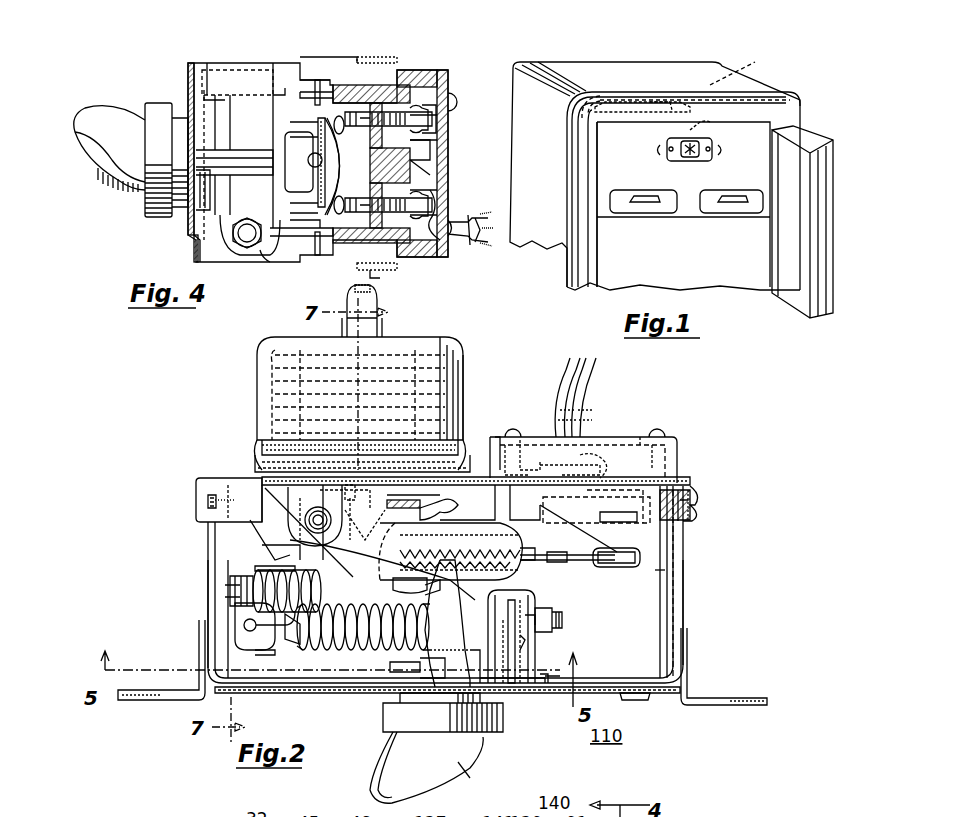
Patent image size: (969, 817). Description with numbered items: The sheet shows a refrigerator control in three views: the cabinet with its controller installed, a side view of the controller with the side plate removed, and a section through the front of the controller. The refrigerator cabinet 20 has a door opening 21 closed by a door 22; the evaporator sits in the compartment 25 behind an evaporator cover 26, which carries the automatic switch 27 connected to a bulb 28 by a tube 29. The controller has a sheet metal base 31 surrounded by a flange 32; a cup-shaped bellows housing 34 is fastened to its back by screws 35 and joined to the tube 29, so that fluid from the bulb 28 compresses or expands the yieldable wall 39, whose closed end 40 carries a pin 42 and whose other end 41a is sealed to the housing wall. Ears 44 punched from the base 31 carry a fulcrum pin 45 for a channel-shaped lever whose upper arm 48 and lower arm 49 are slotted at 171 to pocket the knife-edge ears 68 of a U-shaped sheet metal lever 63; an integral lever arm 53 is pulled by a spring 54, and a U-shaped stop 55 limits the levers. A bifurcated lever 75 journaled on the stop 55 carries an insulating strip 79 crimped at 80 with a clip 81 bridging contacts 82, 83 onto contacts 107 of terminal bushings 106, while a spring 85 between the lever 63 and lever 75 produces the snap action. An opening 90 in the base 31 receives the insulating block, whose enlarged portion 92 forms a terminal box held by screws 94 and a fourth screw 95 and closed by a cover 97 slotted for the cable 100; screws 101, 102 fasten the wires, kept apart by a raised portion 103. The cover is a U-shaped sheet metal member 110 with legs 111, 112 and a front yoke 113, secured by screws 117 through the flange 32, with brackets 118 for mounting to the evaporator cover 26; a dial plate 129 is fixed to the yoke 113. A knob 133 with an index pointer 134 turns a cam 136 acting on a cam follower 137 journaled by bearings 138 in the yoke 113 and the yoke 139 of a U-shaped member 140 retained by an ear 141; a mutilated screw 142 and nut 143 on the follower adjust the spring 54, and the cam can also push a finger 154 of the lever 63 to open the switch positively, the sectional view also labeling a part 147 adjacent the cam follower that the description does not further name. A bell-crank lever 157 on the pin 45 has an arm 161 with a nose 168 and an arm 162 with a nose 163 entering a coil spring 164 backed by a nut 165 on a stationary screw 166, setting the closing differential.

In FIG. 1, the refrigerator cabinet 20 is at (698, 63).
In FIG. 1, the door opening 21 is at (600, 272).
In FIG. 1, the door 22 is at (793, 156).
In FIG. 1, the compartment 25 is at (756, 62).
In FIG. 1, the evaporator cover 26 is at (685, 210).
In FIG. 1, the automatic switch 27 is at (690, 131).
In FIG. 1, the bulb 28 is at (665, 100).
In FIG. 1, the tube 29 is at (600, 100).
In FIG. 2, the tube 29 is at (378, 301).
In FIG. 1, the dial plate 129 is at (692, 158).
In FIG. 4, the base 31 is at (397, 60).
In FIG. 2, the base 31 is at (212, 478).
In FIG. 4, the flange 32 is at (383, 283).
In FIG. 2, the flange 32 is at (236, 508).
In FIG. 2, the bellows housing 34 is at (466, 373).
In FIG. 2, the screws 35 is at (255, 456).
In FIG. 2, the yieldable wall 39 is at (258, 373).
In FIG. 2, the closed end of bellows 40 is at (458, 338).
In FIG. 2, the sealed end of bellows 41a is at (307, 530).
In FIG. 2, the pin 42 is at (370, 510).
In FIG. 2, the ears 44 is at (322, 550).
In FIG. 2, the fulcrum pin 45 is at (330, 528).
In FIG. 4, the upper arm 48 is at (305, 80).
In FIG. 2, the upper arm 48 is at (508, 530).
In FIG. 4, the lower arm 49 is at (304, 242).
In FIG. 4, the lever arm 53 is at (290, 236).
In FIG. 2, the lever arm 53 is at (240, 637).
In FIG. 2, the spring 54 is at (303, 644).
In FIG. 2, the stop 55 is at (525, 502).
In FIG. 4, the sheet metal lever 63 is at (285, 150).
In FIG. 2, the sheet metal lever 63 is at (416, 592).
In FIG. 4, the ears 68 is at (318, 80).
In FIG. 4, the bifurcated lever 75 is at (290, 122).
In FIG. 2, the bifurcated lever 75 is at (548, 566).
In FIG. 2, the insulating strip 79 is at (605, 569).
In FIG. 2, the crimp 80 is at (573, 552).
In FIG. 4, the clip 81 is at (318, 153).
In FIG. 2, the clip 81 is at (630, 569).
In FIG. 2, the contact 82 is at (668, 556).
In FIG. 4, the contact 83 is at (345, 195).
In FIG. 4, the spring 85 is at (313, 168).
In FIG. 2, the spring 85 is at (518, 546).
In FIG. 4, the opening 90 is at (365, 70).
In FIG. 2, the enlarged portion 92 is at (678, 459).
In FIG. 2, the screws 94 is at (660, 438).
In FIG. 2, the fourth screw 95 is at (532, 440).
In FIG. 4, the cover 97 is at (437, 125).
In FIG. 4, the cable 100 is at (462, 250).
In FIG. 2, the cable 100 is at (586, 396).
In FIG. 4, the screw 101 is at (430, 118).
In FIG. 2, the screw 101 is at (630, 436).
In FIG. 4, the screw 102 is at (432, 205).
In FIG. 4, the raised portion 103 is at (432, 165).
In FIG. 4, the terminal bushings 106 is at (428, 80).
In FIG. 2, the terminal bushings 106 is at (680, 474).
In FIG. 4, the contacts 107 is at (372, 140).
In FIG. 2, the contacts 107 is at (668, 542).
In FIG. 4, the U-shaped sheet metal member 110 is at (188, 250).
In FIG. 2, the U-shaped sheet metal member 110 is at (449, 585).
In FIG. 2, the leg 111 is at (207, 545).
In FIG. 2, the leg 112 is at (684, 600).
In FIG. 2, the front yoke 113 is at (630, 700).
In FIG. 2, the screws 117 is at (196, 494).
In FIG. 2, the brackets 118 is at (165, 700).
In FIG. 4, the knob 133 is at (105, 150).
In FIG. 2, the knob 133 is at (435, 768).
In FIG. 4, the index pointer 134 is at (138, 192).
In FIG. 4, the cam 136 is at (200, 212).
In FIG. 2, the cam 136 is at (390, 668).
In FIG. 4, the cam follower 137 is at (222, 245).
In FIG. 2, the cam follower 137 is at (540, 641).
In FIG. 4, the bearings 138 is at (212, 72).
In FIG. 2, the bearings 138 is at (515, 593).
In FIG. 2, the yoke 139 is at (535, 606).
In FIG. 4, the U-shaped member 140 is at (226, 72).
In FIG. 2, the U-shaped member 140 is at (530, 672).
In FIG. 2, the ear 141 is at (555, 680).
In FIG. 4, the mutilated screw 142 is at (248, 248).
In FIG. 2, the mutilated screw 142 is at (562, 613).
In FIG. 4, the nut 143 is at (266, 262).
In FIG. 2, the nut 143 is at (536, 651).
In FIG. 4, the cam 147 is at (232, 180).
In FIG. 4, the finger 154 is at (188, 106).
In FIG. 2, the finger 154 is at (443, 712).
In FIG. 2, the bell-crank lever 157 is at (338, 612).
In FIG. 2, the arm 161 is at (450, 551).
In FIG. 2, the arm 162 is at (290, 637).
In FIG. 2, the nose 163 is at (278, 572).
In FIG. 2, the coil spring 164 is at (266, 560).
In FIG. 2, the nut 165 is at (238, 568).
In FIG. 2, the stationary screw 166 is at (230, 608).
In FIG. 2, the nose 168 is at (452, 503).
In FIG. 2, the slots 171 is at (447, 623).